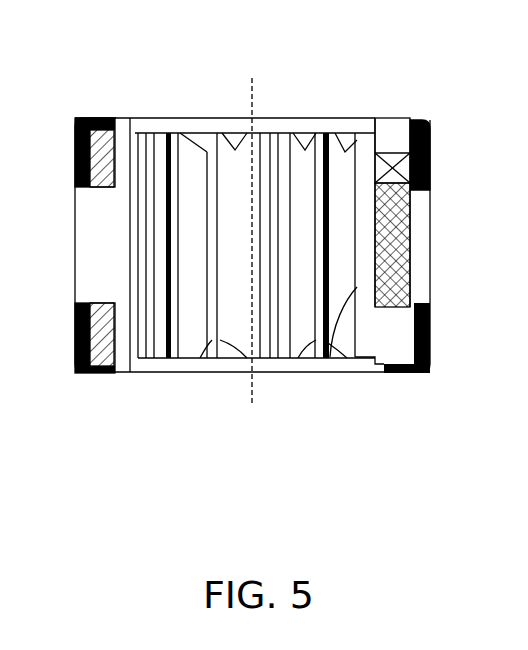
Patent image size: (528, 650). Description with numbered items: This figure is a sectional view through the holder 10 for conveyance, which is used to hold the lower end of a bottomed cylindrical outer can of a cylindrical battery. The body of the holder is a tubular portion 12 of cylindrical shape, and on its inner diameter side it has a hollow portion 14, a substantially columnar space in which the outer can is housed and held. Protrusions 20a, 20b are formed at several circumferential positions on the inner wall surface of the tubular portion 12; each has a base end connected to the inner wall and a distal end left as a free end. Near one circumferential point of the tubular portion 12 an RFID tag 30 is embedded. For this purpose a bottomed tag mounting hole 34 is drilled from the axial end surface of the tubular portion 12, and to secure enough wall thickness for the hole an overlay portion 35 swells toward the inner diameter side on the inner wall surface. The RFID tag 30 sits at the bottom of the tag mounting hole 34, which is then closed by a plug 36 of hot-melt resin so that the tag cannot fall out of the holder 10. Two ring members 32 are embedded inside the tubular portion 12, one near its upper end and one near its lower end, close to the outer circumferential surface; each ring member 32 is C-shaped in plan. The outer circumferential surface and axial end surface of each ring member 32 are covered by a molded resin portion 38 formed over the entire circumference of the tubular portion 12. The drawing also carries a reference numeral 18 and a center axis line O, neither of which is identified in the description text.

The holder for conveyance 10 is at (405, 80).
The tubular portion 12 is at (127, 118).
The hollow portion 14 is at (235, 147).
The end wall 18 is at (95, 118).
The protrusion 20a is at (305, 148).
The protrusion 20b is at (347, 148).
The RFID tag 30 is at (437, 226).
The ring member 32 is at (110, 143).
The tag mounting hole 34 is at (397, 118).
The overlay portion 35 is at (347, 360).
The plug 36 is at (437, 168).
The molded resin portion 38 is at (78, 132).
The central axis O is at (253, 228).